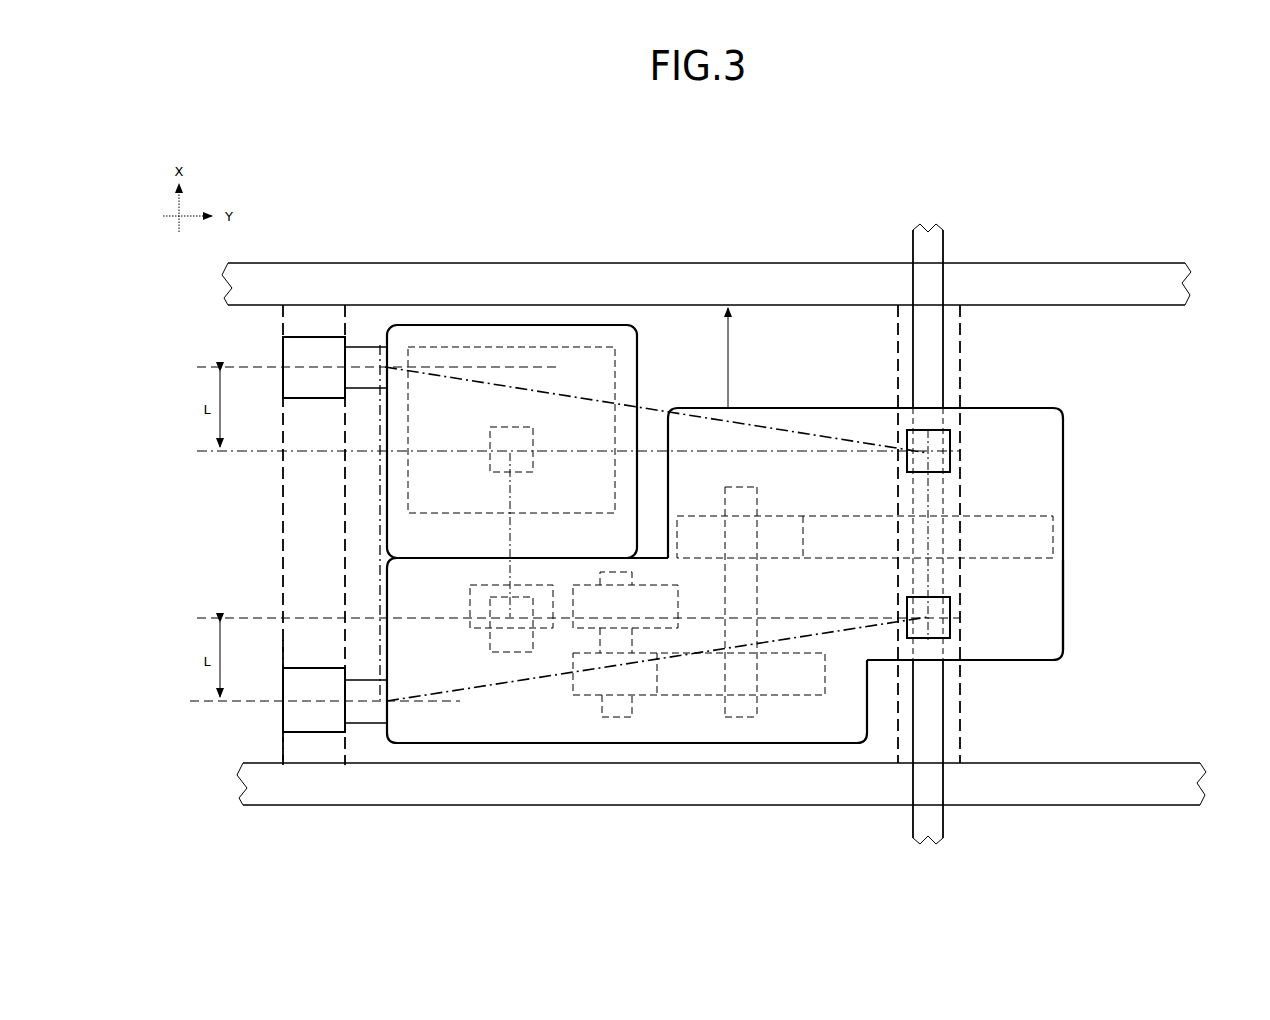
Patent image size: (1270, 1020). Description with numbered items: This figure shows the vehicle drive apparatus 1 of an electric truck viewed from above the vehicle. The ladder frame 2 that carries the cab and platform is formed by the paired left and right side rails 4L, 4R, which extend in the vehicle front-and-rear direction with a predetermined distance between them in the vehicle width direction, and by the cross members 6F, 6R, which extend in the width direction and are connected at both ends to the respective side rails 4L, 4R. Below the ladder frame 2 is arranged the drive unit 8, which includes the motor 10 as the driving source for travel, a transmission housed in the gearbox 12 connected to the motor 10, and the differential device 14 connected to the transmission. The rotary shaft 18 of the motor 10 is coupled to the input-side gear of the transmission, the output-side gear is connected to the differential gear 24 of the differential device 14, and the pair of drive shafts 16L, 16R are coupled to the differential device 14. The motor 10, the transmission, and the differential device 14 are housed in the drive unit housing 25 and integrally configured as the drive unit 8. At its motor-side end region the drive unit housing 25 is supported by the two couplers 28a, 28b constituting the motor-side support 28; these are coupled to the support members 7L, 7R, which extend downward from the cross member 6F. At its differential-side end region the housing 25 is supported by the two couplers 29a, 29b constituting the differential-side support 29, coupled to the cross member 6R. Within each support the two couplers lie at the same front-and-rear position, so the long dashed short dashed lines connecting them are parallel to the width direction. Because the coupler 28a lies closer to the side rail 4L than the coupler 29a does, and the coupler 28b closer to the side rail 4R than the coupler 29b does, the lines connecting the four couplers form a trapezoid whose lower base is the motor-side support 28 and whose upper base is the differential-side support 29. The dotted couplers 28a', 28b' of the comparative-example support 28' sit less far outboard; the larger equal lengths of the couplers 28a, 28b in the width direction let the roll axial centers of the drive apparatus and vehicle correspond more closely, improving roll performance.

The vehicle drive apparatus 1 is at (794, 594).
The ladder frame 2 is at (714, 537).
The side rail 4R is at (540, 262).
The side rail 4L is at (520, 807).
The cross member 6R is at (960, 340).
The cross member 6F is at (283, 655).
The support member 7R is at (283, 375).
The support member 7L is at (283, 705).
The drive unit 8 is at (794, 400).
The motor 10 is at (641, 384).
The gearbox 12 is at (813, 748).
The differential device 14 is at (1067, 635).
The drive shaft 16R is at (946, 250).
The drive shaft 16L is at (946, 822).
The rotary shaft 18 is at (513, 652).
The differential gear 24 is at (1053, 548).
The drive unit housing 25 is at (740, 745).
The motor-side support 28 is at (272, 535).
The coupler 28a is at (279, 535).
The coupler 28b is at (297, 535).
The comparative-example couplers 28' is at (474, 411).
The coupler 28a' is at (474, 430).
The coupler 28b' is at (493, 413).
The differential-side support 29 is at (1075, 534).
The coupler 29a is at (958, 617).
The coupler 29b is at (962, 450).